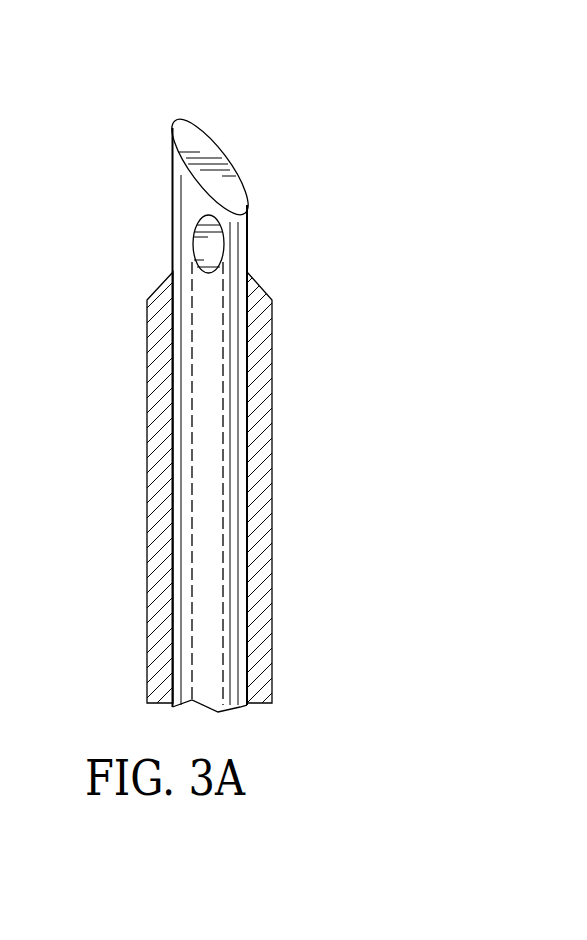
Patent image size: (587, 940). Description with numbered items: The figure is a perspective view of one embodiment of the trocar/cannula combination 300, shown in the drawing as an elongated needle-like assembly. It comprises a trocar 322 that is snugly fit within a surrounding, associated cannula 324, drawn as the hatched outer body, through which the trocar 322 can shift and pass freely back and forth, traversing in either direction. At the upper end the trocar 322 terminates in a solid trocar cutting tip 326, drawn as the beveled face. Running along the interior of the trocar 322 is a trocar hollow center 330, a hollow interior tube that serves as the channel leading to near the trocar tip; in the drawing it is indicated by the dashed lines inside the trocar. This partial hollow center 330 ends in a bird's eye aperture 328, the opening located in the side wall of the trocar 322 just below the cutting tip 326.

The trocar/cannula combination 300 is at (226, 371).
The trocar 322 is at (247, 243).
The cannula 324 is at (273, 533).
The trocar cutting tip 326 is at (212, 152).
The bird's eye aperture 328 is at (197, 243).
The trocar hollow center 330 is at (193, 425).